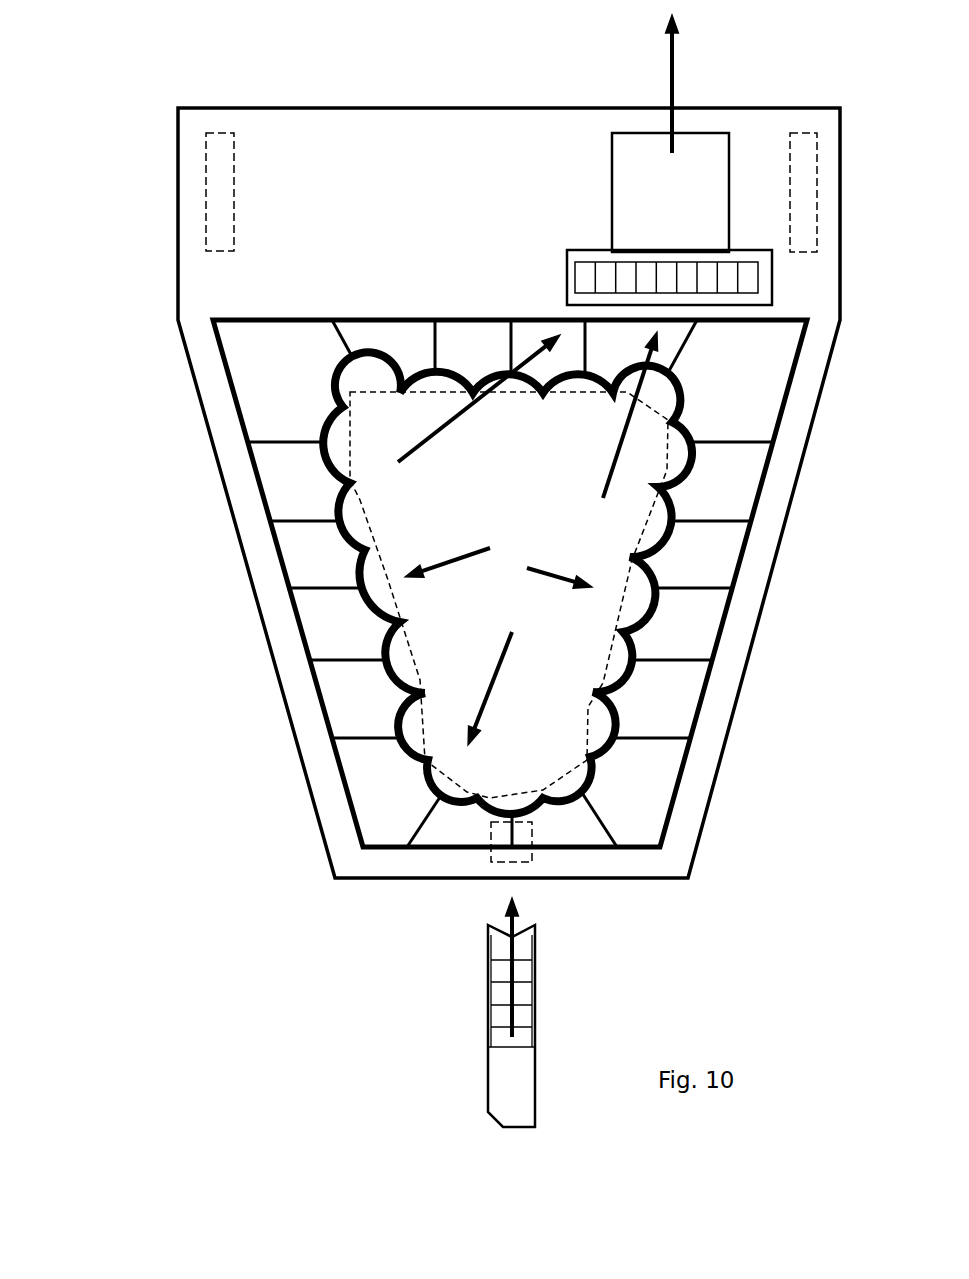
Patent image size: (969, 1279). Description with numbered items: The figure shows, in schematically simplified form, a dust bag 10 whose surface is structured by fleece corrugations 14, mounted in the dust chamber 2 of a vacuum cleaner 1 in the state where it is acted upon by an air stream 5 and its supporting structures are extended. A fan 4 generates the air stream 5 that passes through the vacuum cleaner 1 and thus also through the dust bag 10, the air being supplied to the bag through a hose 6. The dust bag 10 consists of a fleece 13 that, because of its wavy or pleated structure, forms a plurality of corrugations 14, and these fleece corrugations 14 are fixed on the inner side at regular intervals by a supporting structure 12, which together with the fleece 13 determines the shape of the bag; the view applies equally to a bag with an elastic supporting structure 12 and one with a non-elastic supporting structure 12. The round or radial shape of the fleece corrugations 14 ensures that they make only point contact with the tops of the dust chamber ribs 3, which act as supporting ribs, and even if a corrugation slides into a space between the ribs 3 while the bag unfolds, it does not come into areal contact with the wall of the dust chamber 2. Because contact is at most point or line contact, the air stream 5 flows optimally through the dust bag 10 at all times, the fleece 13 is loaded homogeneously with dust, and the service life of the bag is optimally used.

The vacuum cleaner 1 is at (220, 795).
The dust chamber 2 is at (738, 488).
The dust chamber ribs 3 is at (703, 593).
The fan 4 is at (722, 132).
The air stream 5 is at (675, 70).
The hose 6 is at (488, 1082).
The dust bag 10 is at (622, 685).
The supporting structure 12 is at (352, 533).
The fleece 13 is at (390, 625).
The fleece corrugations 14 is at (330, 462).